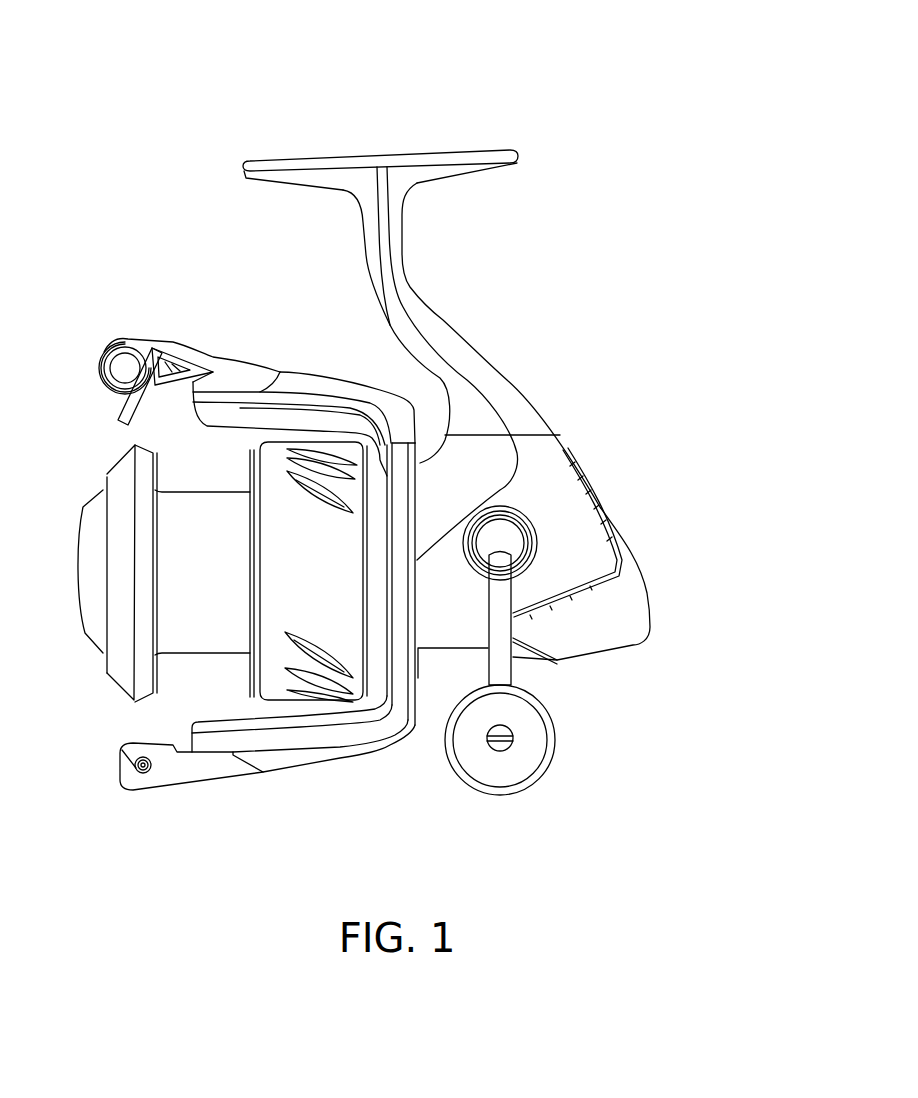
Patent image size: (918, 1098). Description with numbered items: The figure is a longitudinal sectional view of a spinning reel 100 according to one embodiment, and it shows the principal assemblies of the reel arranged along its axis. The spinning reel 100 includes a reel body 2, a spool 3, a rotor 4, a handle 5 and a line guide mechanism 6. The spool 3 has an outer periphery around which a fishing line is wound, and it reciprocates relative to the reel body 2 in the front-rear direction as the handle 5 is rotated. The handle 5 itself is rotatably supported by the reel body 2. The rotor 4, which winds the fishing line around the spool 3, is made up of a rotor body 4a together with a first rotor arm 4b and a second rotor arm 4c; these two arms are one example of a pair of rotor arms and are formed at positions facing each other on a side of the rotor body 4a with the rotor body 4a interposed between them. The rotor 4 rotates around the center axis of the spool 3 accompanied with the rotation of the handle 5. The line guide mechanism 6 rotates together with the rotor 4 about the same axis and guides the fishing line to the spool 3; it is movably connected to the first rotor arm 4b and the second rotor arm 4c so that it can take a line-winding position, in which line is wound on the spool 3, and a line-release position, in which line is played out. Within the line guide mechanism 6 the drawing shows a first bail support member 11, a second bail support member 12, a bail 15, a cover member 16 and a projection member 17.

The spinning reel 100 is at (492, 121).
The reel body 2 is at (552, 413).
The spool 3 is at (190, 485).
The rotor 4 is at (313, 374).
The rotor body 4a is at (376, 714).
The first rotor arm 4b is at (357, 392).
The second rotor arm 4c is at (328, 763).
The handle 5 is at (516, 675).
The line guide mechanism 6 is at (120, 340).
The first bail support member 11 is at (222, 352).
The second bail support member 12 is at (188, 784).
The bail 15 is at (121, 420).
The cover member 16 is at (102, 383).
The projection member 17 is at (157, 344).